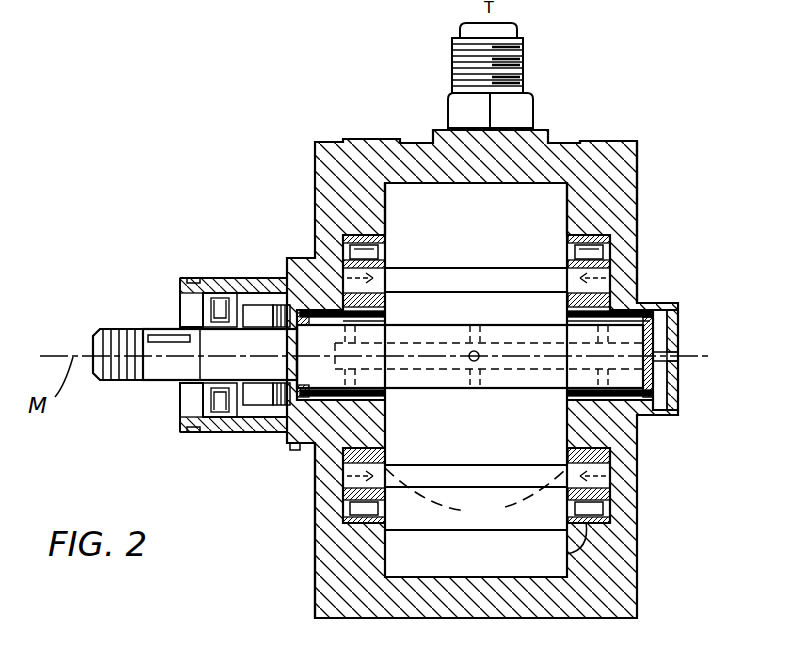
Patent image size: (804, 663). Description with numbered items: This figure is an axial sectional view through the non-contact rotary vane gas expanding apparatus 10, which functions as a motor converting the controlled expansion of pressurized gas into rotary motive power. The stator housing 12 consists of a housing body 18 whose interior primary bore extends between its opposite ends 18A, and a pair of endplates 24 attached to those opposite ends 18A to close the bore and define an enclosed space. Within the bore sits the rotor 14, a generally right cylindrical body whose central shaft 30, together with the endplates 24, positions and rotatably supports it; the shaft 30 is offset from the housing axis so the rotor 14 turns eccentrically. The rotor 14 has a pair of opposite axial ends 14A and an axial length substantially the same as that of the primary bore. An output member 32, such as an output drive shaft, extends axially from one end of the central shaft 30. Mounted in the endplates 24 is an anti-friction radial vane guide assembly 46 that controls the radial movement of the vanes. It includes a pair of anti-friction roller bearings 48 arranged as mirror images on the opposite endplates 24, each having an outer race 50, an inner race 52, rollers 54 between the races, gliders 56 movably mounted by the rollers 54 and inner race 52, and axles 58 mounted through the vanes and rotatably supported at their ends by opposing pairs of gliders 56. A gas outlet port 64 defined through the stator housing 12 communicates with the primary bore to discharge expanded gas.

The gas expanding apparatus 10 is at (203, 234).
The stator housing 12 is at (629, 136).
The rotor 14 is at (420, 190).
The opposite axial ends 14A is at (290, 448).
The housing body 18 is at (566, 136).
The opposite ends 18A is at (385, 196).
The endplates 24 is at (637, 225).
The central shaft 30 is at (437, 388).
The output member 32 is at (162, 372).
The vane guide assembly 46 is at (620, 252).
The roller bearings 48 is at (567, 554).
The outer race 50 is at (567, 212).
The inner race 52 is at (567, 301).
The rollers 54 is at (355, 247).
The gliders 56 is at (476, 497).
The axles 58 is at (452, 470).
The gas outlet port 64 is at (527, 63).